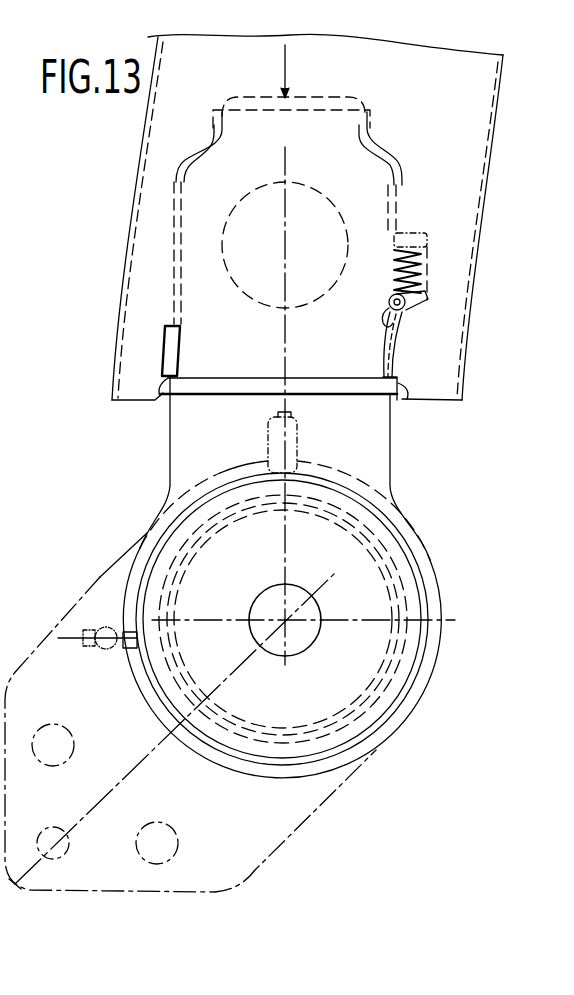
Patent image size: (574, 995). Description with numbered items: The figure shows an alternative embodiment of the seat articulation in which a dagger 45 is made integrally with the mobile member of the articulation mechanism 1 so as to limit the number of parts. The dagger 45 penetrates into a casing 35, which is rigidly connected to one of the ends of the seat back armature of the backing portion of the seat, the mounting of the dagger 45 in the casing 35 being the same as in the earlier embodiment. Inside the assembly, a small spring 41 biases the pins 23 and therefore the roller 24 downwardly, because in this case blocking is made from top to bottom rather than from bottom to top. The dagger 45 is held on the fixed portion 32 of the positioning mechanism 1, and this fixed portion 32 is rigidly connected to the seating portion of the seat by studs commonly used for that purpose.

The articulation mechanism 1 is at (372, 652).
The pins 23 is at (406, 305).
The roller 24 is at (402, 340).
The fixed portion 32 is at (265, 823).
The casing 35 is at (176, 222).
The small spring 41 is at (427, 250).
The dagger 45 is at (365, 423).